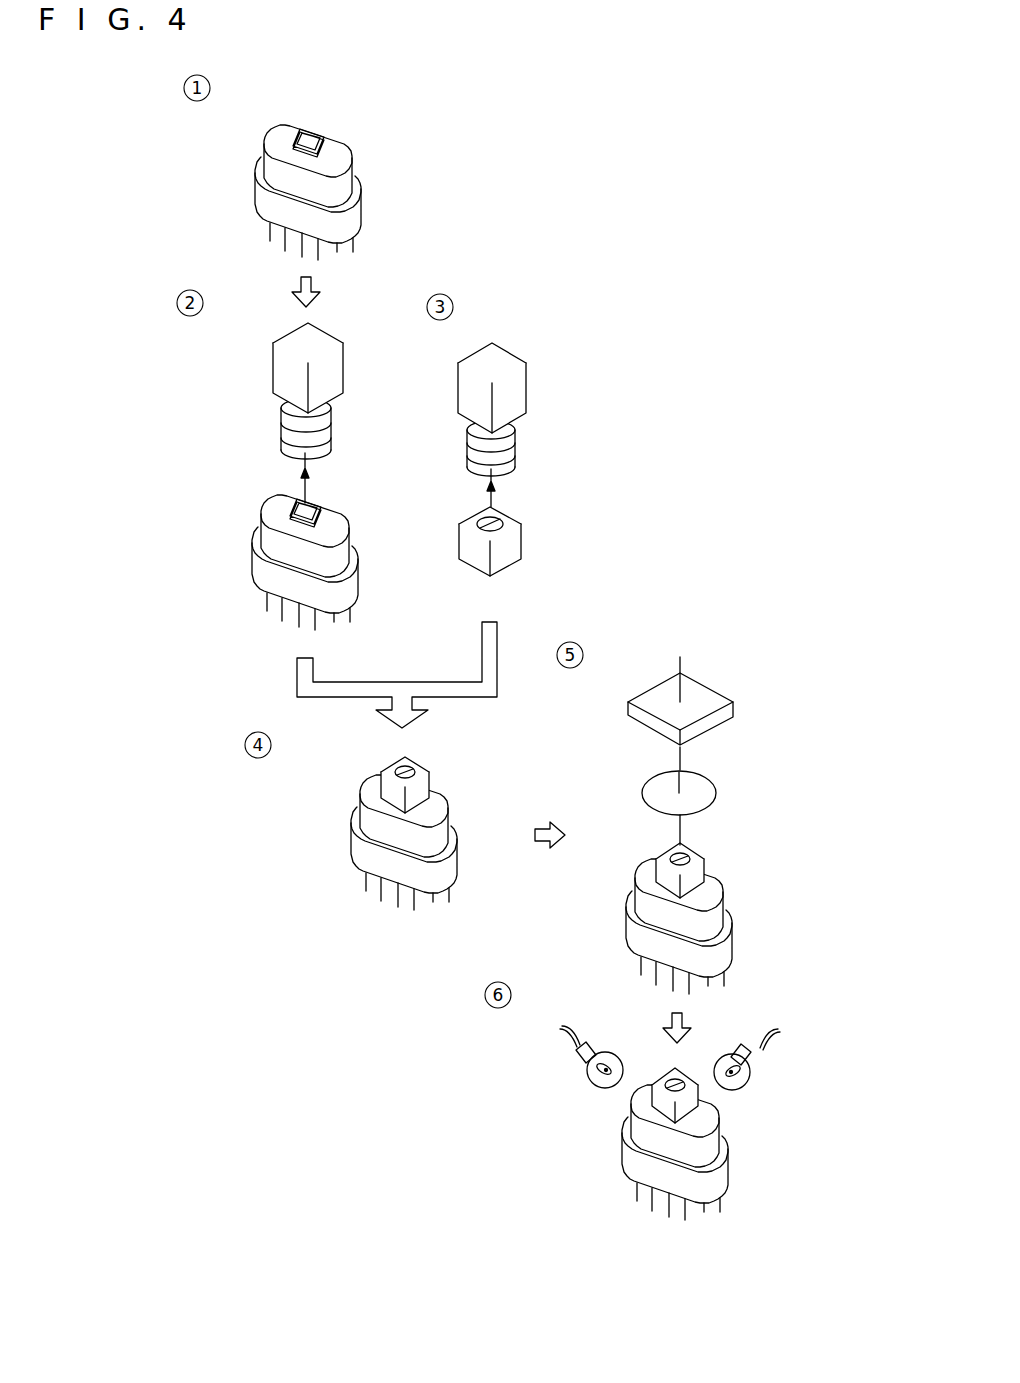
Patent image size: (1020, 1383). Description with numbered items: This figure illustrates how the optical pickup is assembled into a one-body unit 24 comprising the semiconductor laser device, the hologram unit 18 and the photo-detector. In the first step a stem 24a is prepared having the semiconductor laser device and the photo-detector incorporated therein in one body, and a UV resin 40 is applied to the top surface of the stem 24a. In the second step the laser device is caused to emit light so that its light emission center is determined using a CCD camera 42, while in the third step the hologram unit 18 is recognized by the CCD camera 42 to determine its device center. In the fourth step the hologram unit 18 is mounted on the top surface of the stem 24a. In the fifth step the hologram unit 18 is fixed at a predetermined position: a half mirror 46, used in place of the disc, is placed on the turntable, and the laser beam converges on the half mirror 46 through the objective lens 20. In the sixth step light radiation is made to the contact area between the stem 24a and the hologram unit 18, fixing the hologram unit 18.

The hologram unit 18 is at (515, 543).
The objective lens 20 is at (717, 793).
The unit 24 is at (613, 1118).
The stem 24a is at (347, 185).
The UV resin 40 is at (303, 137).
The CCD camera 42 is at (337, 375).
The half mirror 46 is at (710, 692).